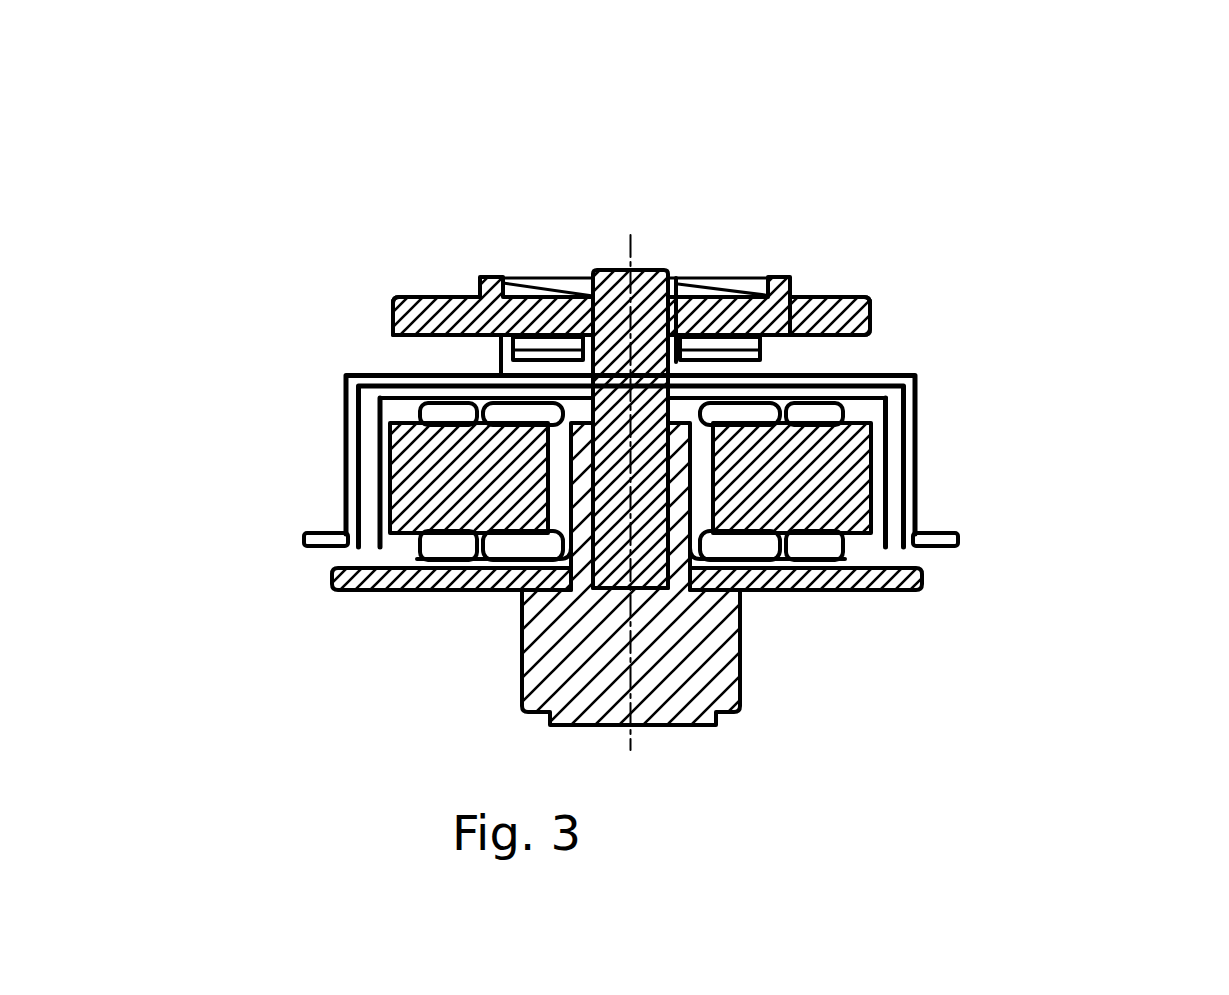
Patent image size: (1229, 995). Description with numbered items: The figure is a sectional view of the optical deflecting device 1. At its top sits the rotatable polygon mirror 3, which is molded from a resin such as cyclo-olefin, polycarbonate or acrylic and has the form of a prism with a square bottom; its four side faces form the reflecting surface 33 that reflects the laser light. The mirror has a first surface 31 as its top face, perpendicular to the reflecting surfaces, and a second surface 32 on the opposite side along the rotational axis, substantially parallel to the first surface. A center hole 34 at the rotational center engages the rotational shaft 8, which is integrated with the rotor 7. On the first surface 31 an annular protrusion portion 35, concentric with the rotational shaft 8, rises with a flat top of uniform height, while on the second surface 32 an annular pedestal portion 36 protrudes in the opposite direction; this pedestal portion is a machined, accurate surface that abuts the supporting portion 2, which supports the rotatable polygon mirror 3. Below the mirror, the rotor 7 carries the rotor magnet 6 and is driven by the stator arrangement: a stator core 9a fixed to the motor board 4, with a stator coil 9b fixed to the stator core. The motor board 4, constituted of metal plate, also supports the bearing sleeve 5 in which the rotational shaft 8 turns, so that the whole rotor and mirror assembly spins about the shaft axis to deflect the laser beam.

The optical deflecting device 1 is at (648, 228).
The supporting portion 2 is at (760, 360).
The rotatable polygon mirror 3 is at (812, 295).
The motor board 4 is at (340, 590).
The bearing sleeve 5 is at (717, 666).
The rotor magnet 6 is at (368, 468).
The rotor 7 is at (920, 428).
The rotational shaft 8 is at (627, 268).
The stator core 9a is at (840, 498).
The stator coil 9b is at (823, 417).
The first surface 31 is at (463, 296).
The second surface 32 is at (408, 340).
The reflecting surface 33 is at (400, 296).
The center hole 34 is at (678, 278).
The protrusion portion 35 is at (493, 278).
The pedestal portion 36 is at (883, 313).